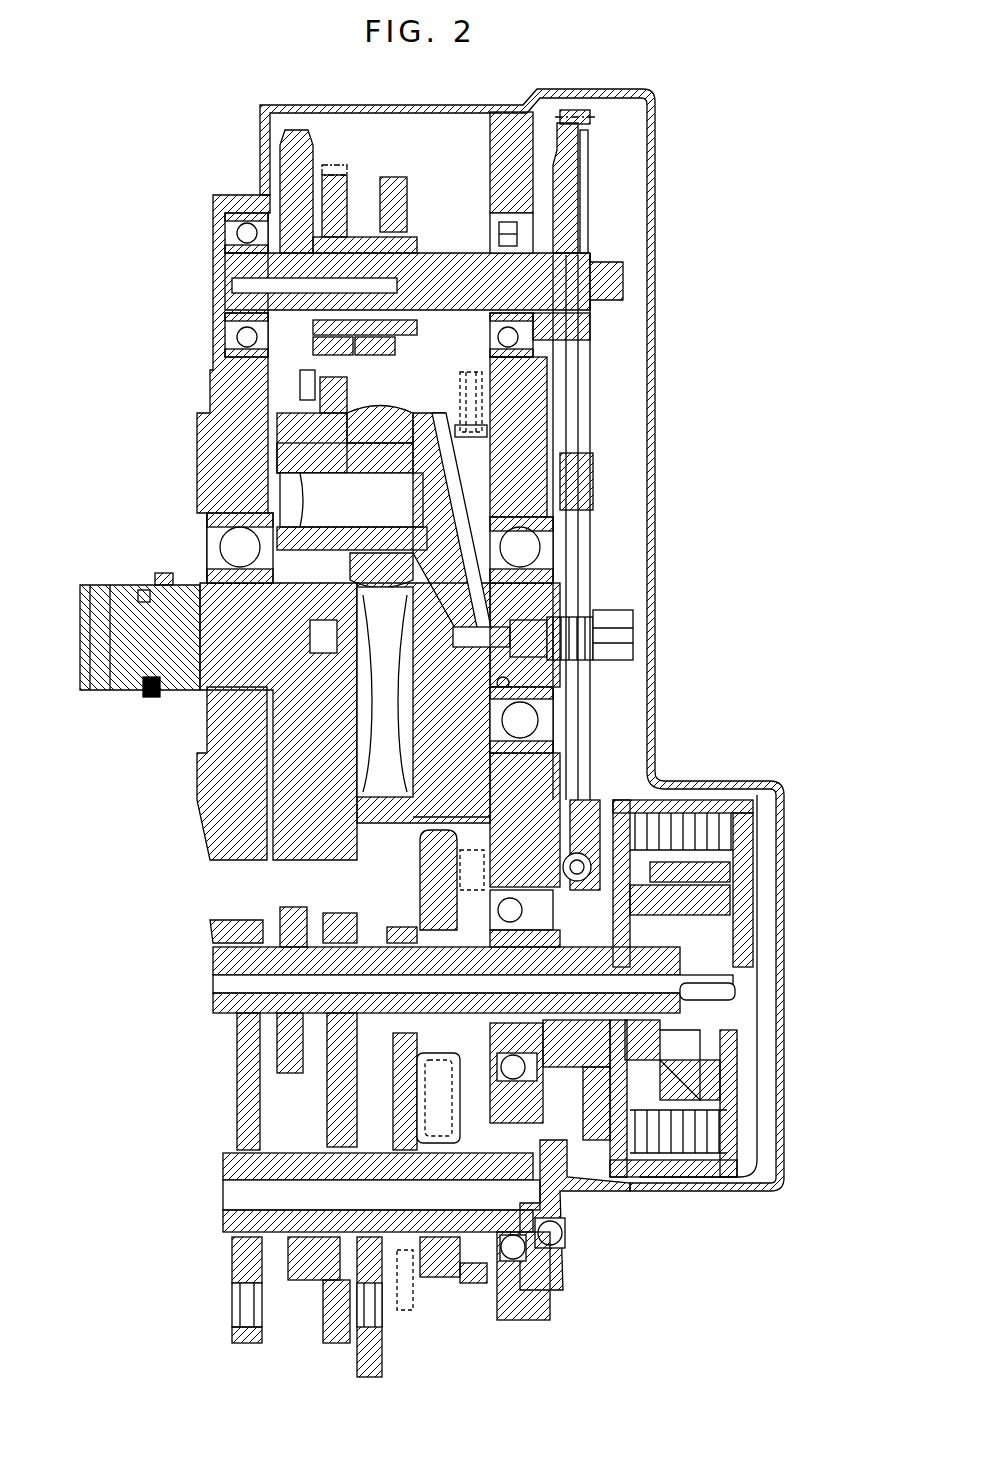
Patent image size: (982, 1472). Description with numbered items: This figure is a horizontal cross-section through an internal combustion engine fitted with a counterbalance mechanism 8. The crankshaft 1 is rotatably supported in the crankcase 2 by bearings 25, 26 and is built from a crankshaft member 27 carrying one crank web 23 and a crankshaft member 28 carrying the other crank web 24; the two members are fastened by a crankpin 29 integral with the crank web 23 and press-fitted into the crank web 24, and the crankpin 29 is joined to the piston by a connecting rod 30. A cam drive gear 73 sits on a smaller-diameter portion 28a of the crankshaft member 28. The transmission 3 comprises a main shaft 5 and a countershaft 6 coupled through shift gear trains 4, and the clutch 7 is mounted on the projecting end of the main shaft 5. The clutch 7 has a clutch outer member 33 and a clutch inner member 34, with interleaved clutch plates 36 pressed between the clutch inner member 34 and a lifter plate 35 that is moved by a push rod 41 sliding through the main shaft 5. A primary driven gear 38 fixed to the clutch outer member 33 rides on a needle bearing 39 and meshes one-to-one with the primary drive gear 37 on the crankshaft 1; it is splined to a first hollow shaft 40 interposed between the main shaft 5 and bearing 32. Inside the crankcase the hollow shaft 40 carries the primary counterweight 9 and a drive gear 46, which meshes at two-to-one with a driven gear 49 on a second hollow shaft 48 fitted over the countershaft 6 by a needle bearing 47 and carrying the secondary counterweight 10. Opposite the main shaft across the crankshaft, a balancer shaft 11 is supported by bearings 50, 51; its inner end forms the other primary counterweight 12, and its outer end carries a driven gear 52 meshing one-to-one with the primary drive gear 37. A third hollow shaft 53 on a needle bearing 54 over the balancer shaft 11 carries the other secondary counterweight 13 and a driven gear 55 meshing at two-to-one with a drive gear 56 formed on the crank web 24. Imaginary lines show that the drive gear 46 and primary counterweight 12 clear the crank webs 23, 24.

The crankshaft 1 is at (197, 690).
The crankcase 2 is at (548, 412).
The transmission 3 is at (202, 1204).
The shift gear trains 4 is at (217, 1081).
The main shaft 5 is at (220, 1013).
The countershaft 6 is at (225, 1232).
The clutch 7 is at (733, 807).
The counterbalance mechanism 8 is at (418, 171).
The primary counterweight 9 is at (420, 906).
The secondary counterweight 10 is at (425, 1075).
The balancer shaft 11 is at (456, 253).
The primary counterweight 12 is at (260, 120).
The secondary counterweight 13 is at (388, 177).
The crank web 23 is at (437, 412).
The crank web 24 is at (277, 430).
The bearing 25 is at (553, 548).
The bearing 26 is at (207, 520).
The crankshaft member 27 is at (468, 520).
The crankshaft member 28 is at (105, 695).
The smaller-diameter portion 28a is at (185, 585).
The crankpin 29 is at (335, 473).
The connecting rod 30 is at (400, 700).
The bearing 32 is at (457, 817).
The clutch outer member 33 is at (647, 1172).
The clutch inner member 34 is at (653, 1060).
The lifter plate 35 is at (757, 1080).
The clutch plates 36 is at (670, 808).
The primary drive gear 37 is at (600, 752).
The primary driven gear 38 is at (580, 1162).
The needle bearing 39 is at (395, 927).
The first hollow shaft 40 is at (345, 915).
The push rod 41 is at (713, 988).
The drive gear 46 is at (453, 432).
The needle bearing 47 is at (420, 1252).
The second hollow shaft 48 is at (447, 1262).
The driven gear 49 is at (462, 1282).
The bearing 50 is at (213, 262).
The bearing 51 is at (490, 328).
The driven gear 52 is at (595, 192).
The third hollow shaft 53 is at (383, 355).
The needle bearing 54 is at (347, 355).
The driven gear 55 is at (335, 173).
The drive gear 56 is at (312, 400).
The cam drive gear 73 is at (140, 595).